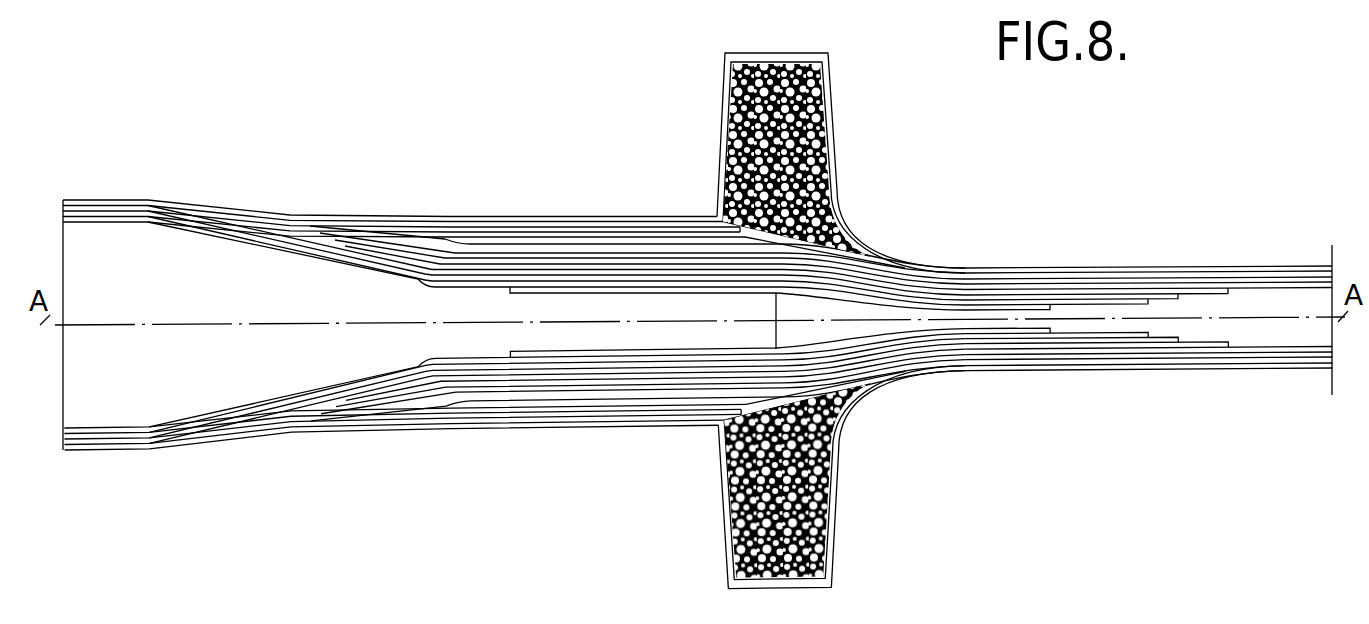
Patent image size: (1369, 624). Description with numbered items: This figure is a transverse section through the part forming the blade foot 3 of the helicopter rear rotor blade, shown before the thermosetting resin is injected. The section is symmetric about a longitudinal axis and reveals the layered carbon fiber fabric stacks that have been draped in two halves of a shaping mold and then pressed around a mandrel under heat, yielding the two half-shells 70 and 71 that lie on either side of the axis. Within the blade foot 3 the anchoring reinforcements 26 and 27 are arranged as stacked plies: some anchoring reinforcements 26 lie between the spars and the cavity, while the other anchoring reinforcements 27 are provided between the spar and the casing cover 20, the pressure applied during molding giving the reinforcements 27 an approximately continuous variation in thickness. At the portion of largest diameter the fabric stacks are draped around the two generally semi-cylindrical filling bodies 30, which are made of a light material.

The part forming the blade foot 3 is at (515, 421).
The casing cover 20 is at (1152, 357).
The anchoring reinforcements 26 is at (1080, 343).
The anchoring reinforcements 27 is at (637, 395).
The filling bodies 30 is at (815, 502).
The half-shell 70 is at (483, 398).
The half-shell 71 is at (477, 243).